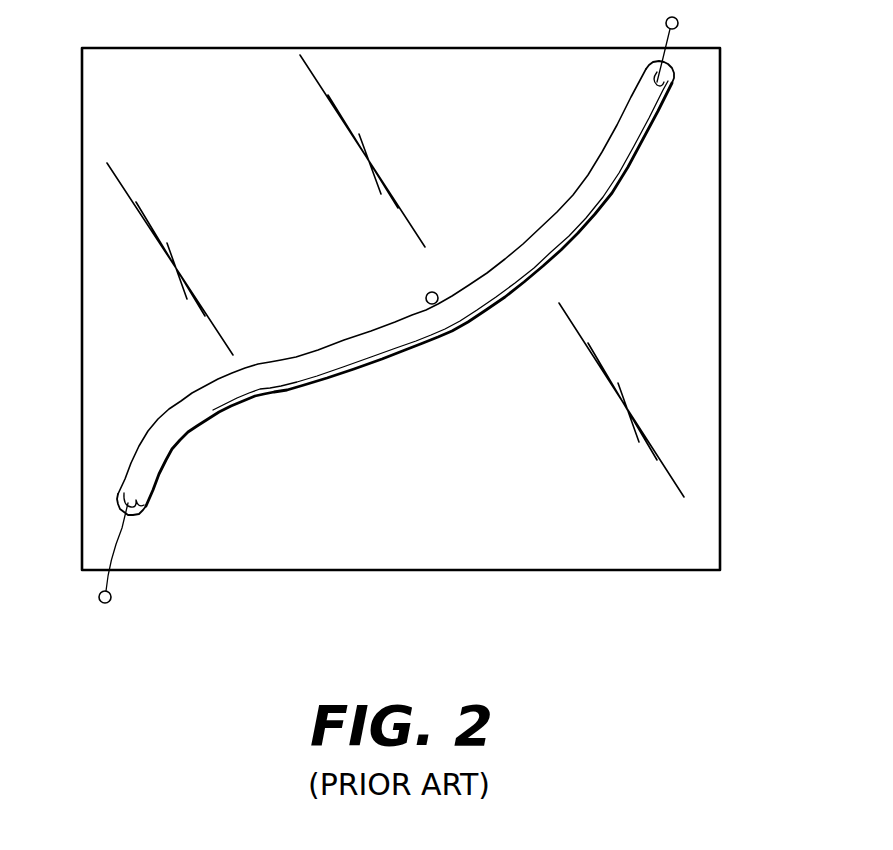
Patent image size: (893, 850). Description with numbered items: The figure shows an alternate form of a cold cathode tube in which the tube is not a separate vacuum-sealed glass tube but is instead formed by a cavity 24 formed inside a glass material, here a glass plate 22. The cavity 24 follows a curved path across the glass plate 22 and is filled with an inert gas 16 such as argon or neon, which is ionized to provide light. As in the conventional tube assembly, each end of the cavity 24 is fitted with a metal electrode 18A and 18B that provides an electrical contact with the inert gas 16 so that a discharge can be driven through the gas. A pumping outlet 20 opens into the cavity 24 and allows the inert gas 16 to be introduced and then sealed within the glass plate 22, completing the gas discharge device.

The inert gas 16 is at (567, 225).
The metal electrode 18A is at (655, 85).
The metal electrode 18B is at (140, 503).
The pumping outlet 20 is at (438, 294).
The glass plate 22 is at (720, 360).
The cavity 24 is at (455, 328).